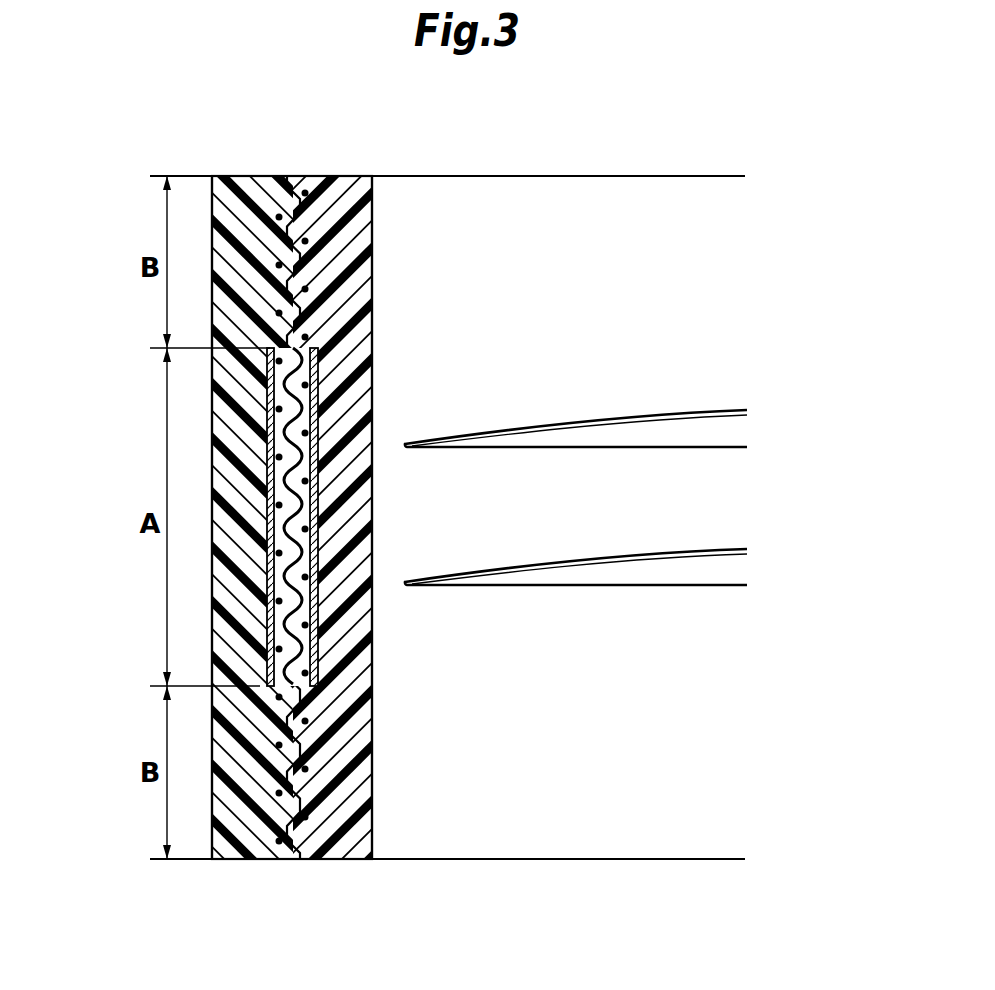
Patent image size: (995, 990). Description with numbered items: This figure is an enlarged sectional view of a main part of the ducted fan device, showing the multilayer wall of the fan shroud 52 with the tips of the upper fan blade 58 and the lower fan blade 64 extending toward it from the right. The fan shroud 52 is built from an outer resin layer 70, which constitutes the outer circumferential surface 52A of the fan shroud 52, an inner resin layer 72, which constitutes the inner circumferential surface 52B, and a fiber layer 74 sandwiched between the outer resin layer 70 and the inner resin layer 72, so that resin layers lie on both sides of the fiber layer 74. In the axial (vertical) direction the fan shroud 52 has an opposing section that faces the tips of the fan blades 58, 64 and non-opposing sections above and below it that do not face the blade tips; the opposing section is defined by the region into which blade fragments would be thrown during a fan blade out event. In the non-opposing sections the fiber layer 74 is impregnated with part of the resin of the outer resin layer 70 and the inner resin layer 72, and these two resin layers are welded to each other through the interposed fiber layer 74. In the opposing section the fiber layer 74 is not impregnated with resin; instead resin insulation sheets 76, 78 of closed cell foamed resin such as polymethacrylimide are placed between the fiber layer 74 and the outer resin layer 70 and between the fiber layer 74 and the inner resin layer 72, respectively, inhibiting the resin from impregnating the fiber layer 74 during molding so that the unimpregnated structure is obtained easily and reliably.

The fan shroud 52 is at (373, 169).
The outer circumferential surface 52A is at (212, 587).
The inner circumferential surface 52B is at (372, 231).
The upper fan blade 58 is at (653, 430).
The lower fan blade 64 is at (672, 577).
The outer resin layer 70 is at (247, 843).
The inner resin layer 72 is at (343, 845).
The fiber layer 74 is at (305, 610).
The resin insulation sheet 76 is at (270, 535).
The resin insulation sheet 78 is at (318, 478).